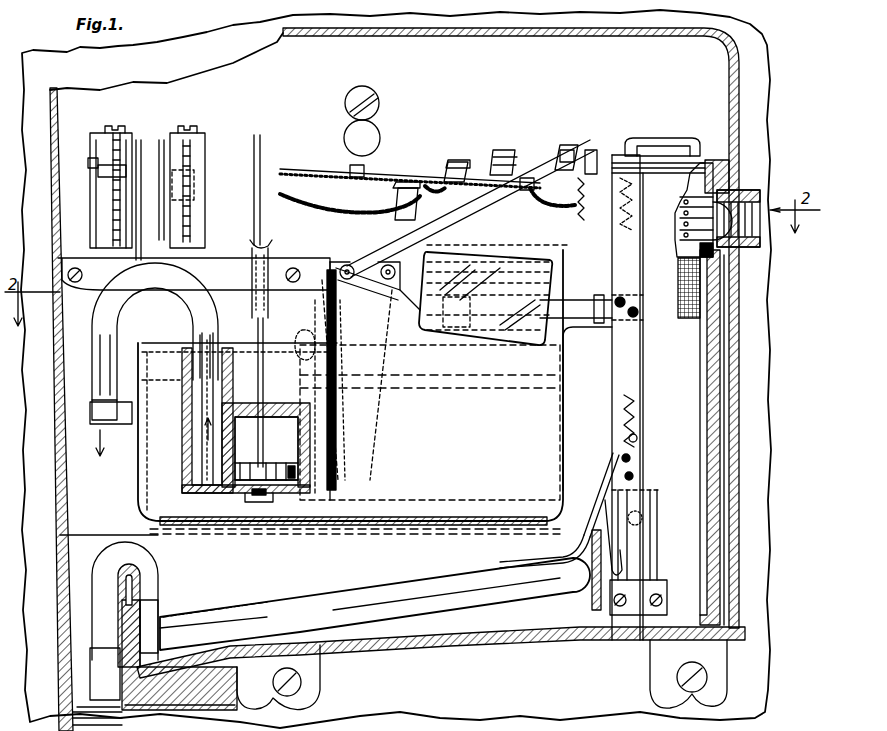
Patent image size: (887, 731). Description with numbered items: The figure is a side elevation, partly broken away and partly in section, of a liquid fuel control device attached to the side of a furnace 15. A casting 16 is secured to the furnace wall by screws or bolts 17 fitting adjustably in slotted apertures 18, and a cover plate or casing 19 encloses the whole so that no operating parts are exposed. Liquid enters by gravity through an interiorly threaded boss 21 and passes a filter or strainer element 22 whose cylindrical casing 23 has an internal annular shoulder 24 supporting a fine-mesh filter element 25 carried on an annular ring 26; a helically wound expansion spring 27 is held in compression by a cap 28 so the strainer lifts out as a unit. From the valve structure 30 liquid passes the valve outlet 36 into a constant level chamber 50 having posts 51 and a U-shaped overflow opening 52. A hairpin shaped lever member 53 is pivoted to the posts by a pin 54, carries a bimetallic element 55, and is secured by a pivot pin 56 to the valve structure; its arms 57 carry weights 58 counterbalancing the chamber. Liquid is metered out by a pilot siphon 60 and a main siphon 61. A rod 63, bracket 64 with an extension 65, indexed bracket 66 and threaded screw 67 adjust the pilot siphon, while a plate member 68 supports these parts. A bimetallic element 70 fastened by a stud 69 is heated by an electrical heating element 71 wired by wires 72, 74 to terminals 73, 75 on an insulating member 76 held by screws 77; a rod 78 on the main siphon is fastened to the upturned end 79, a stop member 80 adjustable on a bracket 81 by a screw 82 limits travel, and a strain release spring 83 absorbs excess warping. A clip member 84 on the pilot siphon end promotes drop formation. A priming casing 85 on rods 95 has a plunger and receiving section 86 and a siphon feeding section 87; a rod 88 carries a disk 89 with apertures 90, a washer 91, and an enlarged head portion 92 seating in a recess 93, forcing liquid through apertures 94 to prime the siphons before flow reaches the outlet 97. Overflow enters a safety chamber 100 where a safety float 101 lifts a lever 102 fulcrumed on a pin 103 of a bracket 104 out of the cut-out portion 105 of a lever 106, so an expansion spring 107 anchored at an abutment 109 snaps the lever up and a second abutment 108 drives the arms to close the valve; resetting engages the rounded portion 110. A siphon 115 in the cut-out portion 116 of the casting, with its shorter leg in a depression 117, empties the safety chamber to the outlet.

The side of a furnace 15 is at (203, 42).
The casting 16 is at (208, 708).
The screws or bolts 17 is at (380, 105).
The slotted apertures 18 is at (345, 125).
The cover plate or casing 19 is at (58, 485).
The interiorly threaded boss 21 is at (748, 190).
The filter or strainer element 22 is at (659, 124).
The cylindrical casing 23 is at (712, 345).
The internal annular shoulder 24 is at (722, 270).
The filter element 25 is at (724, 420).
The annular ring 26 is at (700, 290).
The helically wound expansion spring 27 is at (683, 222).
The cap 28 is at (688, 140).
The valve structure 30 is at (470, 241).
The valve outlet 36 is at (450, 345).
The chamber 50 is at (618, 418).
The posts 51 is at (356, 270).
The U-shaped opening 52 is at (302, 338).
The hairpin shaped lever member 53 is at (322, 300).
The pin 54 is at (345, 250).
The bimetallic element 55 is at (362, 450).
The pivot pin 56 is at (392, 265).
The arms 57 is at (566, 296).
The weights 58 is at (568, 334).
The pilot siphon 60 is at (95, 340).
The main siphon 61 is at (122, 282).
The rod 63 is at (141, 200).
The bracket 64 is at (105, 172).
The extension 65 is at (88, 162).
The bracket 66 is at (90, 207).
The threaded screw 67 is at (118, 126).
The plate member 68 is at (500, 194).
The stud 69 is at (580, 222).
The bimetallic element 70 is at (308, 168).
The electrical heating element 71 is at (332, 178).
The wire 72 is at (310, 207).
The terminal 73 is at (448, 162).
The wire 74 is at (540, 160).
The terminal 75 is at (496, 150).
The member 76 is at (560, 148).
The screws 77 is at (393, 192).
The rod 78 is at (192, 232).
The upturned end 79 is at (162, 140).
The stop member 80 is at (195, 190).
The bracket 81 is at (205, 210).
The screw 82 is at (196, 128).
The strain release spring 83 is at (576, 200).
The clip member 84 is at (120, 425).
The casing 85 is at (184, 428).
The plunger and receiving section 86 is at (222, 445).
The siphon feeding section 87 is at (184, 471).
The rod 88 is at (254, 145).
The disk 89 is at (282, 462).
The apertures 90 is at (290, 483).
The washer 91 is at (240, 482).
The enlarged head portion 92 is at (267, 496).
The recess 93 is at (258, 502).
The apertures 94 is at (212, 490).
The rods 95 is at (252, 275).
The outlet 97 is at (130, 715).
The safety chamber 100 is at (145, 535).
The safety float 101 is at (352, 596).
The lever 102 is at (528, 560).
The pin 103 is at (635, 526).
The bracket 104 is at (657, 520).
The cut-out portion 105 is at (631, 537).
The lever 106 is at (626, 375).
The expansion spring 107 is at (626, 230).
The second abutment 108 is at (608, 296).
The abutment 109 is at (618, 455).
The rounded portion 110 is at (600, 480).
The siphon 115 is at (152, 565).
The cut-out portion 116 is at (140, 579).
The depression 117 is at (190, 600).